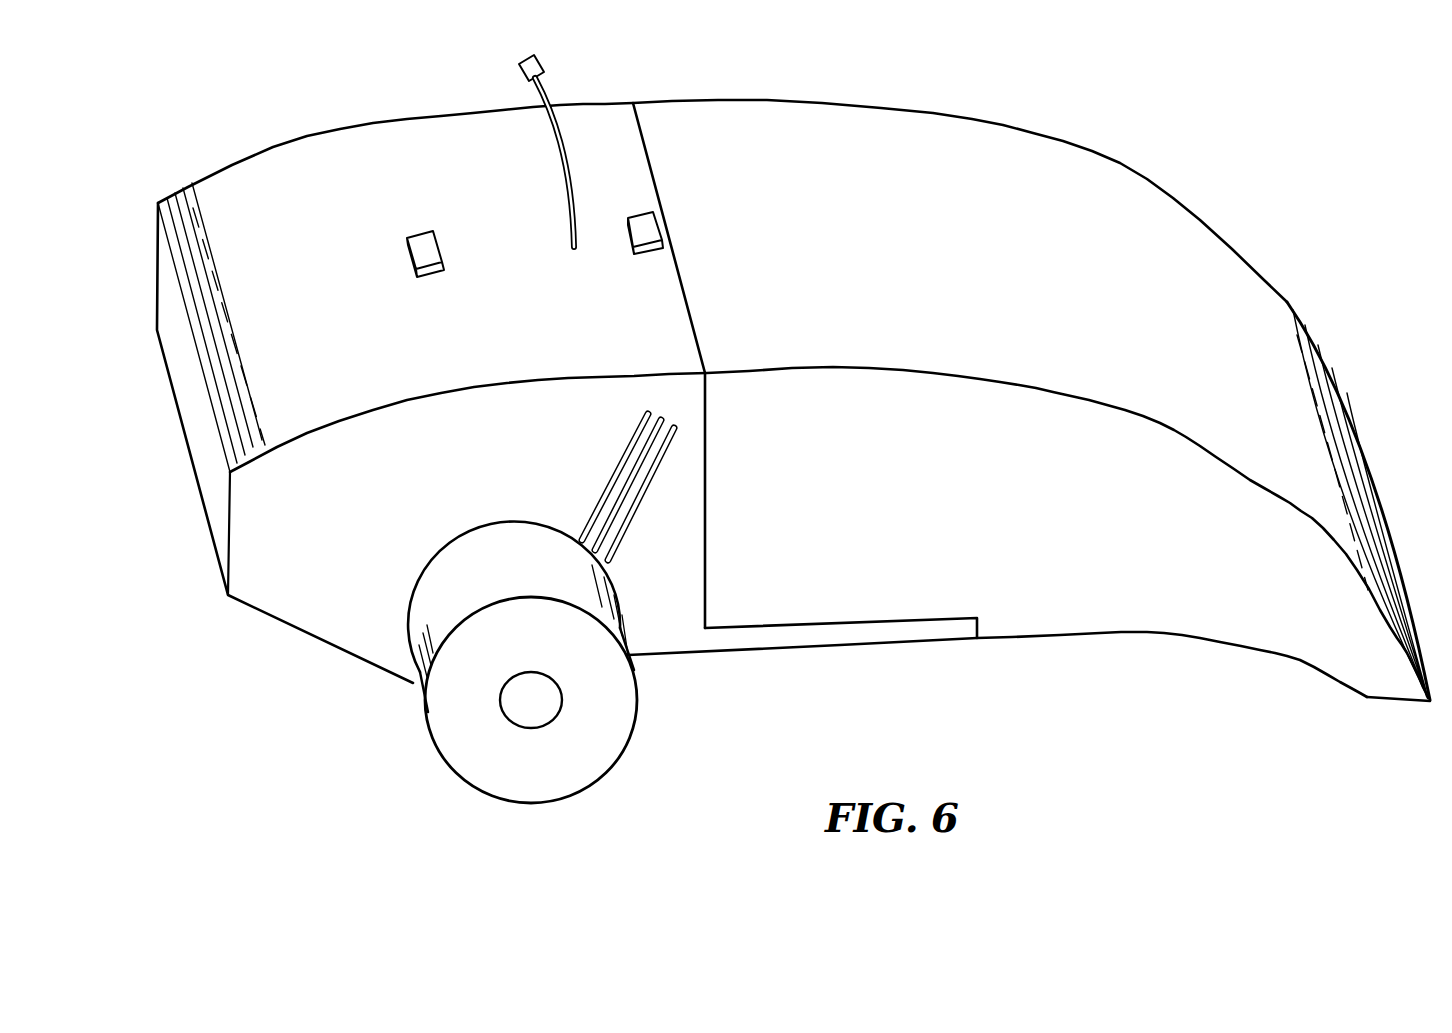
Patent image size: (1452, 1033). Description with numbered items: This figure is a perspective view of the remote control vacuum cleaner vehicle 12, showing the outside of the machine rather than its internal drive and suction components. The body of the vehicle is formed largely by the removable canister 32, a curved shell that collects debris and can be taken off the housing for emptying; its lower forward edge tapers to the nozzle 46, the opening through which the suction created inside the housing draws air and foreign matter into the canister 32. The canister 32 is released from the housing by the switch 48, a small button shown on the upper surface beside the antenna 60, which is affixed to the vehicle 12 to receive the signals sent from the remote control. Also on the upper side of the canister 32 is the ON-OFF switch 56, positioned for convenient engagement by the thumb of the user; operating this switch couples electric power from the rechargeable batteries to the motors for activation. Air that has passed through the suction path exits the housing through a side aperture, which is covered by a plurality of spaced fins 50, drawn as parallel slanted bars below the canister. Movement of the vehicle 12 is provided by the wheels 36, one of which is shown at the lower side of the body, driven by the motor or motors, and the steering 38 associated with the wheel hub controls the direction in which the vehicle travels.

The remote control vacuum cleaner vehicle 12 is at (1018, 205).
The removable canister 32 is at (829, 628).
The wheels 36 is at (470, 743).
The steering 38 is at (550, 702).
The nozzle 46 is at (1402, 705).
The switch 48 is at (643, 222).
The spaced fins 50 is at (652, 458).
The ON-OFF switch 56 is at (425, 240).
The antenna 60 is at (567, 128).